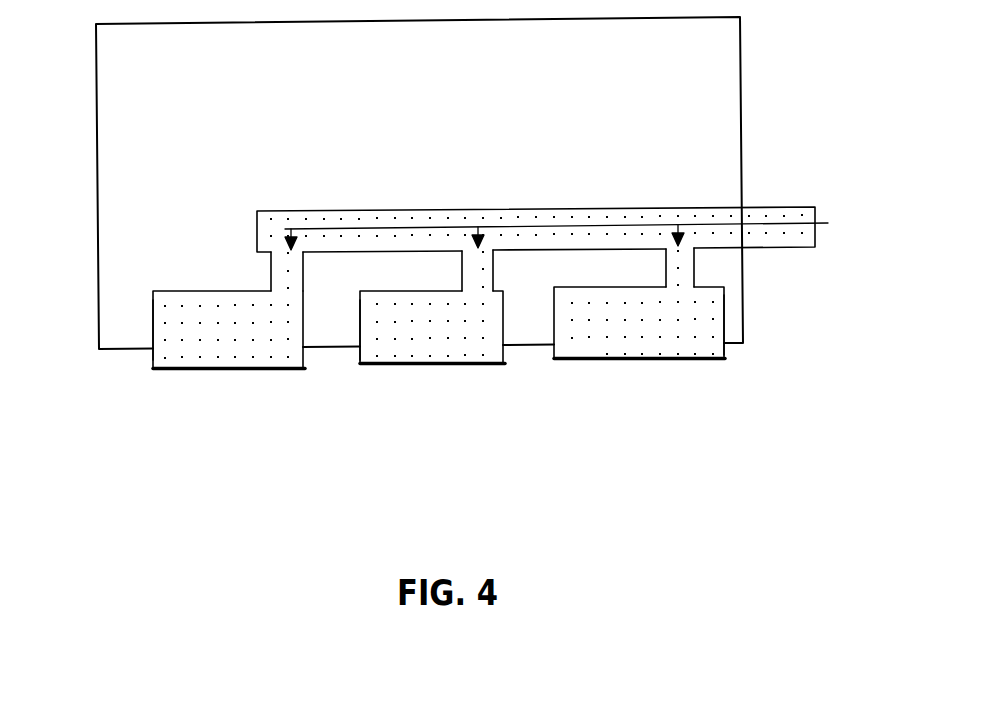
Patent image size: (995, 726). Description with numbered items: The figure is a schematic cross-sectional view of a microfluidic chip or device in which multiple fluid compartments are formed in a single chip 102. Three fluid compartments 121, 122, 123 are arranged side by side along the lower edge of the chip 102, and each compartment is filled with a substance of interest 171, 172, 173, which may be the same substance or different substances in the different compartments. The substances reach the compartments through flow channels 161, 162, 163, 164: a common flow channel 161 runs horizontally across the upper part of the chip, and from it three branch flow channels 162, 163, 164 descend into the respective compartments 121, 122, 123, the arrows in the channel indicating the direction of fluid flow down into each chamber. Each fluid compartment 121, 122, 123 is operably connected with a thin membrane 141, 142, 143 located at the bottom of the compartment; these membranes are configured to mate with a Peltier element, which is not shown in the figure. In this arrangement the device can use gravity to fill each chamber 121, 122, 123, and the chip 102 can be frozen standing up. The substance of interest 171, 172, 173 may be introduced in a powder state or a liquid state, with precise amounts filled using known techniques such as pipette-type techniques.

The chip 102 is at (430, 112).
The flow channel 161 is at (533, 217).
The flow channel 162 is at (272, 280).
The flow channel 163 is at (462, 275).
The flow channel 164 is at (694, 250).
The substance of interest 171 is at (228, 329).
The substance of interest 172 is at (431, 327).
The substance of interest 173 is at (639, 322).
The fluid compartment 121 is at (153, 330).
The fluid compartment 122 is at (360, 362).
The fluid compartment 123 is at (725, 333).
The thin membrane 141 is at (303, 368).
The thin membrane 142 is at (503, 364).
The thin membrane 143 is at (555, 360).